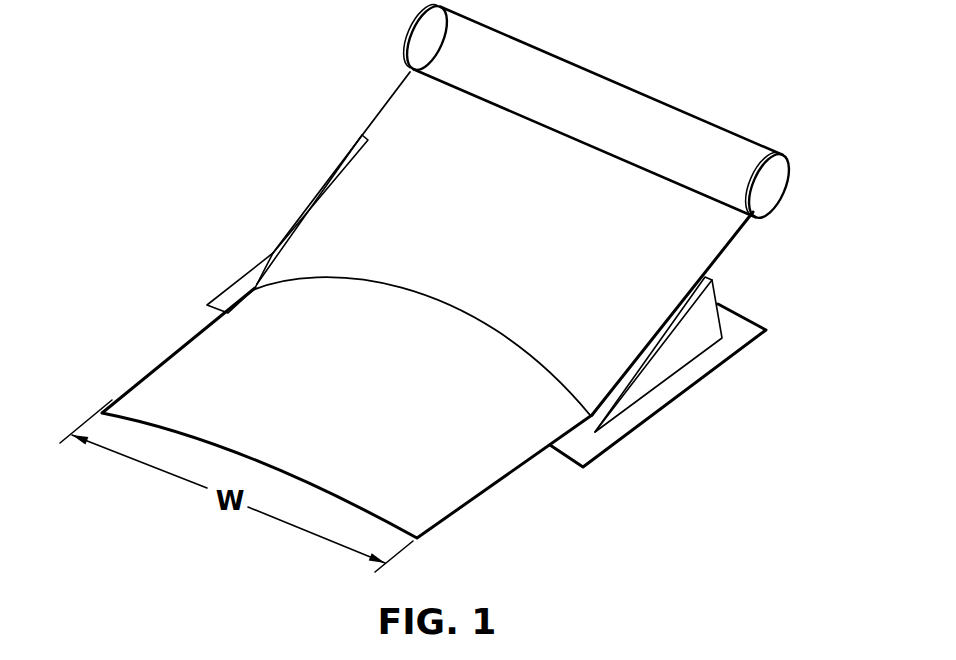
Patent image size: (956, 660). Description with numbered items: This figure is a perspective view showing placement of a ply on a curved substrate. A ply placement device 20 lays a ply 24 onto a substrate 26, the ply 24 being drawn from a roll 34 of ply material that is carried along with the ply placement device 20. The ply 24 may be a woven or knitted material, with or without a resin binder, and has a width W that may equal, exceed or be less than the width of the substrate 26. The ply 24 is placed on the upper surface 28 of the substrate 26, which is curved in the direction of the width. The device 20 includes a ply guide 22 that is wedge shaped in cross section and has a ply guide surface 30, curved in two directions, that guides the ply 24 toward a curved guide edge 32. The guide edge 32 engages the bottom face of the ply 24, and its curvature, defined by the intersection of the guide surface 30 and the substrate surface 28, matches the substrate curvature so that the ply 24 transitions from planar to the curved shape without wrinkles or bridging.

The ply placement device 20 is at (290, 194).
The ply guide 22 is at (680, 373).
The ply 24 is at (430, 112).
The substrate 26 is at (228, 290).
The upper surface of the substrate 28 is at (743, 328).
The ply guide surface 30 is at (620, 392).
The curved guide edge 32 is at (533, 357).
The roll 34 is at (413, 24).